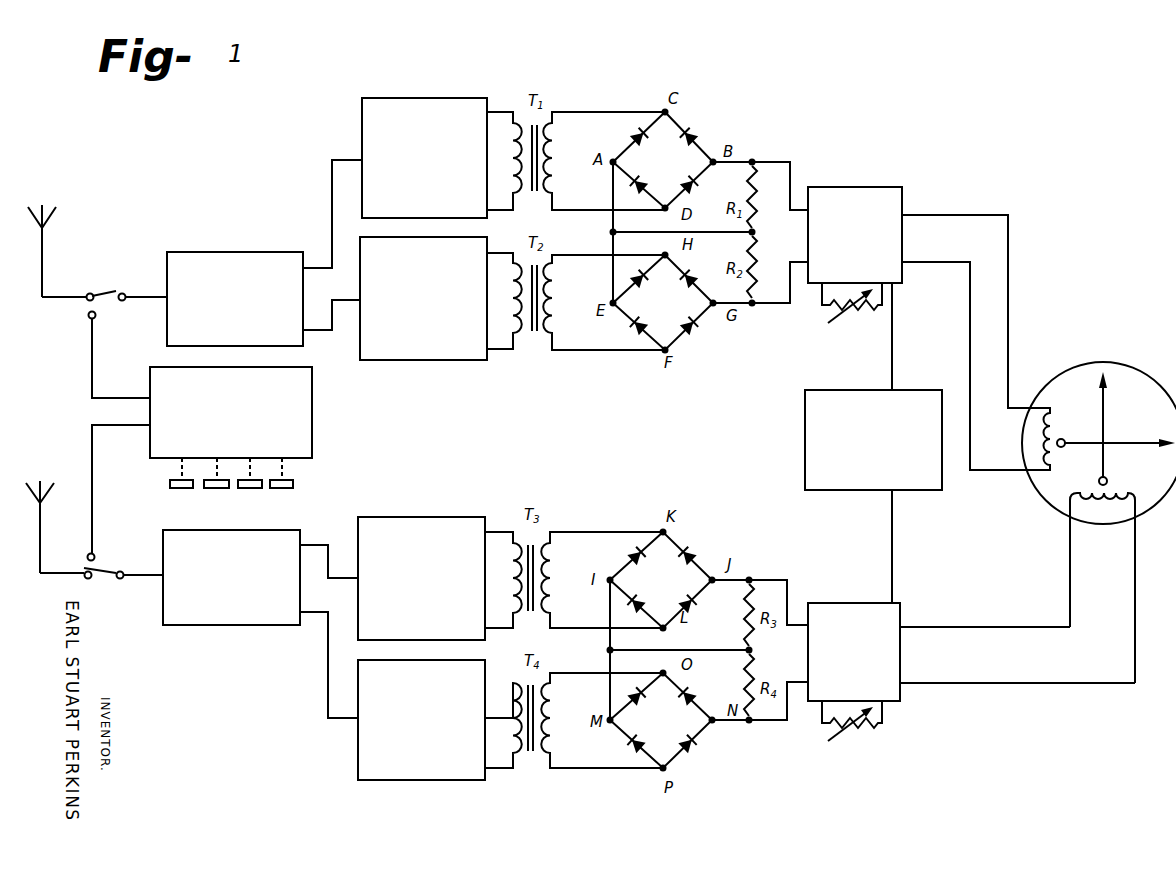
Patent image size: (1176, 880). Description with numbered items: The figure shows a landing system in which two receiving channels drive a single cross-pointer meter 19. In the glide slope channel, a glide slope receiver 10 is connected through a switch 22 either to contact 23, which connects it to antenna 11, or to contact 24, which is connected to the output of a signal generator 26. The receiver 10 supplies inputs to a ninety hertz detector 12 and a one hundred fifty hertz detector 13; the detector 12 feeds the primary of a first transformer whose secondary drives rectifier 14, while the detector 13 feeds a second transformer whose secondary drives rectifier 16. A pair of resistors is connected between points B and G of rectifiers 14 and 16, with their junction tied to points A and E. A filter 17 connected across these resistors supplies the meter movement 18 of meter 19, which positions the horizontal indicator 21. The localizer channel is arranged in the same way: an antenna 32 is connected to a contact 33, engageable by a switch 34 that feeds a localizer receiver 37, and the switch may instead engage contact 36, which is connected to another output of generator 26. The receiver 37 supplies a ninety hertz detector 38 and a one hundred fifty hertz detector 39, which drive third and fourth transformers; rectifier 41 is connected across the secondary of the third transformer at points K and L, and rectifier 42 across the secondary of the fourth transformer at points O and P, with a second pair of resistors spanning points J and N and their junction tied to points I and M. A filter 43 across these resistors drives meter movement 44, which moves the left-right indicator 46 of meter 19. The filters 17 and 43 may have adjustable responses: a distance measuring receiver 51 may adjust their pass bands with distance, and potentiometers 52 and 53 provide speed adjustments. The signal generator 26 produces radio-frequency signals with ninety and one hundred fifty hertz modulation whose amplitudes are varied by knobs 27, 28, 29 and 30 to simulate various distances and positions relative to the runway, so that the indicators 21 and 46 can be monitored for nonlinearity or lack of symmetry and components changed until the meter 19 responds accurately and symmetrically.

The glide slope receiver 10 is at (298, 256).
The antenna 11 is at (58, 213).
The 90 hertz detector 12 is at (363, 127).
The 150 hertz detector 13 is at (385, 352).
The rectifier 14 is at (688, 161).
The rectifier 16 is at (671, 326).
The filter 17 is at (896, 203).
The meter movement 18 is at (1032, 440).
The meter 19 is at (1133, 340).
The horizontal indicator 21 is at (1141, 441).
The switch 22 is at (113, 293).
The contact 23 is at (93, 292).
The contact 24 is at (88, 318).
The signal generator 26 is at (314, 434).
The control knob 27 is at (180, 490).
The control knob 28 is at (218, 490).
The control knob 29 is at (248, 490).
The control knob 30 is at (284, 490).
The antenna 32 is at (54, 494).
The contact 33 is at (93, 582).
The switch 34 is at (121, 566).
The contact 36 is at (87, 557).
The localizer receiver 37 is at (213, 615).
The 90 hertz detector 38 is at (455, 527).
The 150 hertz detector 39 is at (396, 772).
The rectifier 41 is at (693, 575).
The rectifier 42 is at (675, 749).
The filter 43 is at (840, 610).
The meter movement 44 is at (1108, 512).
The left-right indicator 46 is at (1103, 463).
The distance measuring receiver 51 is at (806, 431).
The potentiometer 52 is at (856, 318).
The potentiometer 53 is at (860, 738).